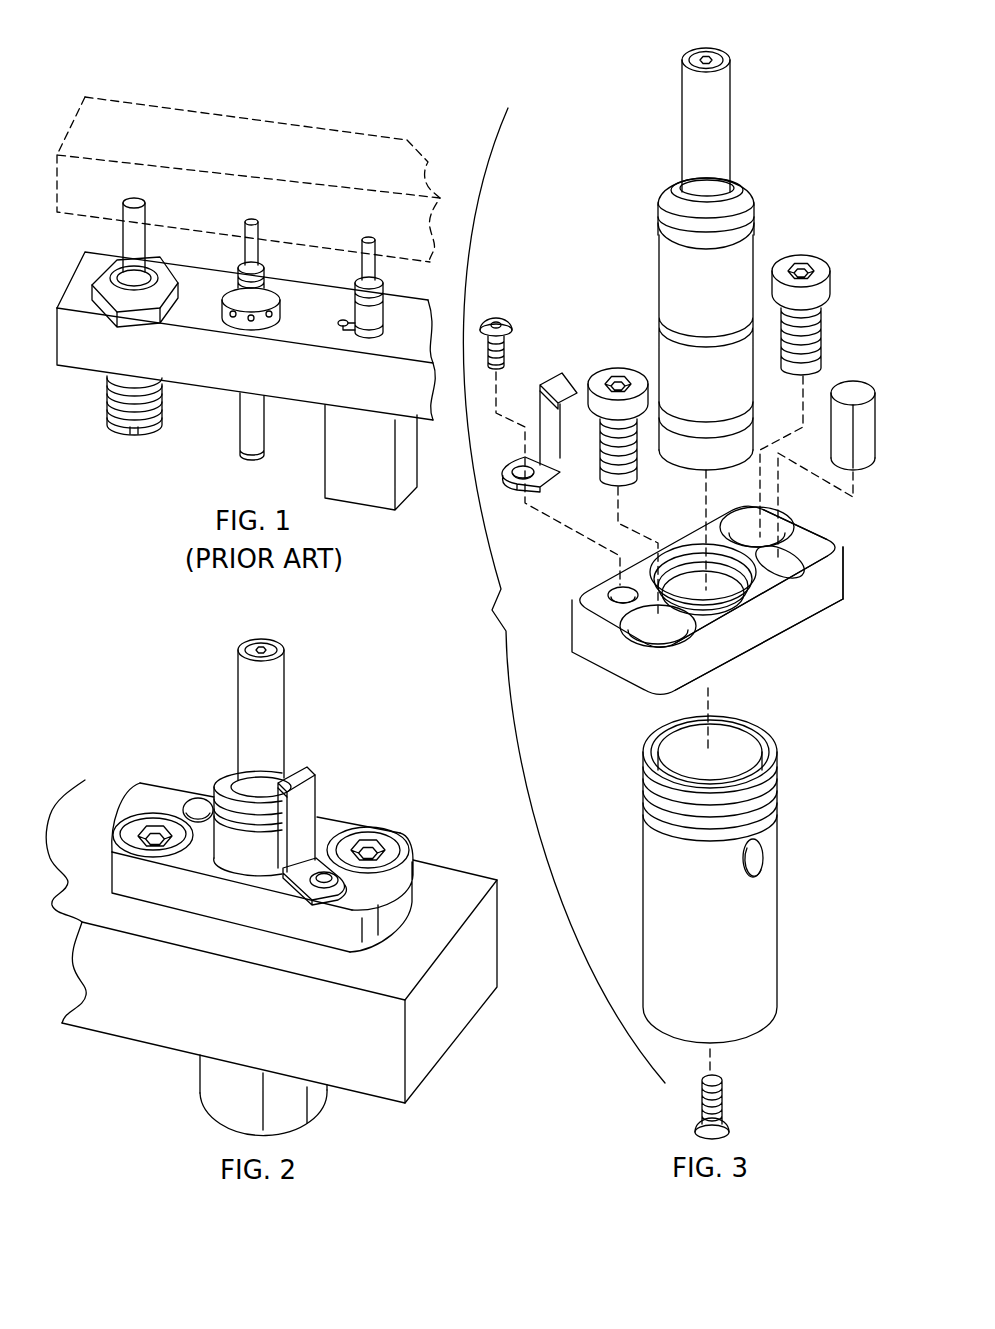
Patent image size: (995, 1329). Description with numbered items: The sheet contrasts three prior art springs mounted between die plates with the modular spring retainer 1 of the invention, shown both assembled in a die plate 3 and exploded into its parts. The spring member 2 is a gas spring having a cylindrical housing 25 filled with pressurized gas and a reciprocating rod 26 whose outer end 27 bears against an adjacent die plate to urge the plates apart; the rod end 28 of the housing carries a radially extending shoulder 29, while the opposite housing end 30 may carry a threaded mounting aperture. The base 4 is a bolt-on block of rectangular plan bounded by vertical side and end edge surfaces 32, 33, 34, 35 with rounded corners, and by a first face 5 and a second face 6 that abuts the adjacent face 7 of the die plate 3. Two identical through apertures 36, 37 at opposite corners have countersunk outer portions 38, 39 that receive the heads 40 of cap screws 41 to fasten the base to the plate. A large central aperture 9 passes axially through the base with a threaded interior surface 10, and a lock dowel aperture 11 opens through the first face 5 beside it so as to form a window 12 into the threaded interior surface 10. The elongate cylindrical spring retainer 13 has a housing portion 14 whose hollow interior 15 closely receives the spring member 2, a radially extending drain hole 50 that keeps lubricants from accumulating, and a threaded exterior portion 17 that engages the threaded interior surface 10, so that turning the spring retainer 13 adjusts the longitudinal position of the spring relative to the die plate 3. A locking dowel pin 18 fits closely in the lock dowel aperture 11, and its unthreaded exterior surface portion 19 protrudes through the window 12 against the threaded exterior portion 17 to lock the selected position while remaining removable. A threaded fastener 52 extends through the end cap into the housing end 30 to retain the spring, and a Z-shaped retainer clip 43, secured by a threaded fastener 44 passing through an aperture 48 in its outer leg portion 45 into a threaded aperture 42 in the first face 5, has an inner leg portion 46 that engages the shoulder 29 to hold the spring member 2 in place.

In FIG. 2, the modular spring retainer 1 is at (198, 680).
In FIG. 3, the modular spring retainer 1 is at (564, 595).
In FIG. 2, the spring member 2 is at (236, 770).
In FIG. 3, the spring member 2 is at (658, 186).
In FIG. 1, the die plate 3 is at (61, 184).
In FIG. 2, the die plate 3 is at (497, 880).
In FIG. 2, the base 4 is at (147, 790).
In FIG. 3, the base 4 is at (575, 597).
In FIG. 3, the first face 5 is at (847, 537).
In FIG. 3, the second face 6 is at (830, 612).
In FIG. 1, the adjacent face of die plate 7 is at (89, 263).
In FIG. 2, the adjacent face of die plate 7 is at (457, 883).
In FIG. 3, the central aperture 9 is at (678, 547).
In FIG. 3, the threaded interior surface 10 is at (700, 560).
In FIG. 2, the lock dowel aperture 11 is at (170, 813).
In FIG. 3, the lock dowel aperture 11 is at (810, 577).
In FIG. 3, the window 12 is at (750, 600).
In FIG. 2, the spring retainer 13 is at (198, 1097).
In FIG. 3, the spring retainer 13 is at (644, 749).
In FIG. 2, the housing portion 14 is at (218, 1070).
In FIG. 3, the housing portion 14 is at (751, 936).
In FIG. 3, the hollow interior 15 is at (675, 740).
In FIG. 3, the threaded exterior portion 17 is at (777, 777).
In FIG. 2, the locking dowel pin 18 is at (200, 803).
In FIG. 3, the locking dowel pin 18 is at (843, 390).
In FIG. 3, the unthreaded exterior surface portion 19 is at (841, 447).
In FIG. 2, the cylindrical housing 25 is at (243, 853).
In FIG. 3, the cylindrical housing 25 is at (668, 300).
In FIG. 2, the reciprocating rod 26 is at (280, 685).
In FIG. 3, the reciprocating rod 26 is at (722, 88).
In FIG. 2, the outer end of rod 27 is at (277, 640).
In FIG. 3, the outer end of rod 27 is at (717, 53).
In FIG. 2, the rod end of housing 28 is at (235, 812).
In FIG. 3, the rod end of housing 28 is at (660, 212).
In FIG. 2, the shoulder 29 is at (228, 775).
In FIG. 3, the shoulder 29 is at (747, 187).
In FIG. 3, the housing end 30 is at (753, 437).
In FIG. 2, the side edge surface 32 is at (330, 812).
In FIG. 2, the end edge surface 33 is at (158, 890).
In FIG. 2, the end edge surface 34 is at (392, 903).
In FIG. 2, the side edge surface 35 is at (135, 802).
In FIG. 3, the through aperture 36 is at (753, 537).
In FIG. 3, the through aperture 37 is at (627, 623).
In FIG. 2, the countersunk outer portion 38 is at (130, 790).
In FIG. 3, the countersunk outer portion 38 is at (785, 507).
In FIG. 2, the countersunk outer portion 39 is at (357, 823).
In FIG. 3, the countersunk outer portion 39 is at (650, 640).
In FIG. 2, the head 40 is at (117, 853).
In FIG. 3, the head 40 is at (830, 290).
In FIG. 2, the cap screw 41 is at (140, 833).
In FIG. 3, the cap screw 41 is at (808, 256).
In FIG. 3, the threaded aperture 42 is at (612, 588).
In FIG. 2, the retainer clip 43 is at (360, 868).
In FIG. 3, the retainer clip 43 is at (537, 425).
In FIG. 2, the threaded fastener 44 is at (345, 882).
In FIG. 3, the threaded fastener 44 is at (510, 343).
In FIG. 2, the outer leg portion 45 is at (330, 900).
In FIG. 3, the outer leg portion 45 is at (540, 485).
In FIG. 2, the inner leg portion 46 is at (300, 770).
In FIG. 3, the inner leg portion 46 is at (565, 377).
In FIG. 3, the aperture 48 is at (517, 460).
In FIG. 3, the drain hole 50 is at (763, 858).
In FIG. 3, the threaded fastener 52 is at (729, 1135).